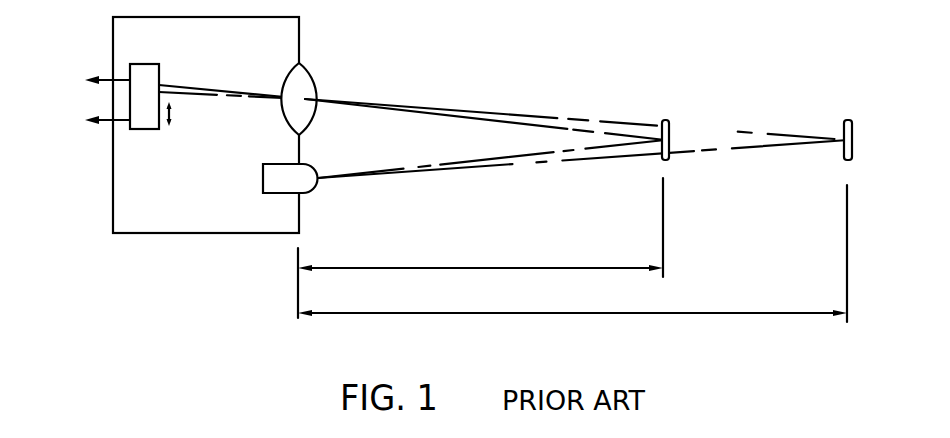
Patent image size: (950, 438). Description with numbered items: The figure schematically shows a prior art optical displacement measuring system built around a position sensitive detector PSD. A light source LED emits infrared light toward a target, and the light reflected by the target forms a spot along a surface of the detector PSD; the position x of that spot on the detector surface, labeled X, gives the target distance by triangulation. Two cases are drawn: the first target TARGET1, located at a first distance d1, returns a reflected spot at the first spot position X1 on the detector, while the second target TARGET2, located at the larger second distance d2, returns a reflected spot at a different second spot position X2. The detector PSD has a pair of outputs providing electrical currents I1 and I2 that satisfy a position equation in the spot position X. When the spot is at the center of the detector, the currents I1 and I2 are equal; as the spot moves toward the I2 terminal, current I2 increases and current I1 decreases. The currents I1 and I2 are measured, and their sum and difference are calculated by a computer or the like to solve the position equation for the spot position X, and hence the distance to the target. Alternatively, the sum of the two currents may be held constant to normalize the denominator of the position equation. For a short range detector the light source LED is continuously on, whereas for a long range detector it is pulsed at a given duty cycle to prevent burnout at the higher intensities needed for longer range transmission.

The position sensitive detector PSD is at (145, 81).
The output current I1 is at (85, 120).
The output current I2 is at (85, 80).
The spot position x1 X1 is at (161, 82).
The spot position x2 X2 is at (161, 88).
The spot position x X is at (171, 116).
The light source LED is at (240, 184).
The target 1 TARGET1 is at (652, 126).
The target 2 TARGET2 is at (846, 126).
The target distance d1 is at (480, 248).
The target distance d2 is at (572, 253).